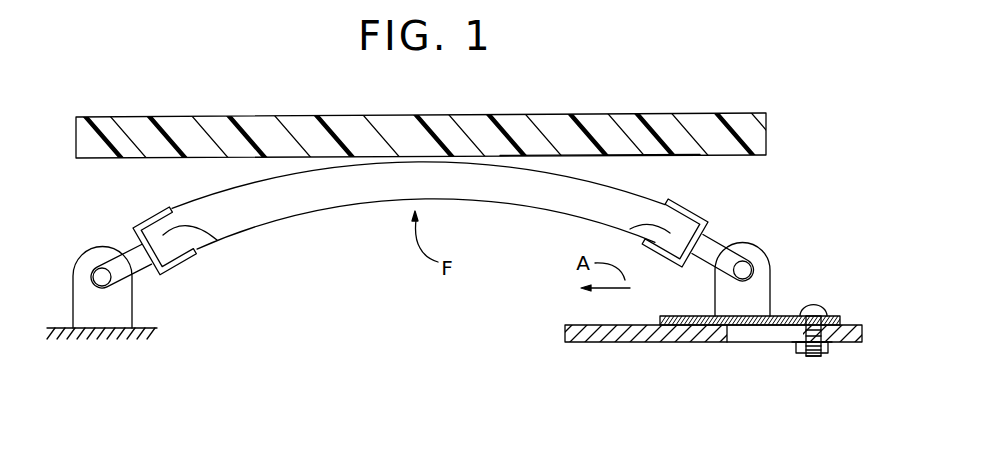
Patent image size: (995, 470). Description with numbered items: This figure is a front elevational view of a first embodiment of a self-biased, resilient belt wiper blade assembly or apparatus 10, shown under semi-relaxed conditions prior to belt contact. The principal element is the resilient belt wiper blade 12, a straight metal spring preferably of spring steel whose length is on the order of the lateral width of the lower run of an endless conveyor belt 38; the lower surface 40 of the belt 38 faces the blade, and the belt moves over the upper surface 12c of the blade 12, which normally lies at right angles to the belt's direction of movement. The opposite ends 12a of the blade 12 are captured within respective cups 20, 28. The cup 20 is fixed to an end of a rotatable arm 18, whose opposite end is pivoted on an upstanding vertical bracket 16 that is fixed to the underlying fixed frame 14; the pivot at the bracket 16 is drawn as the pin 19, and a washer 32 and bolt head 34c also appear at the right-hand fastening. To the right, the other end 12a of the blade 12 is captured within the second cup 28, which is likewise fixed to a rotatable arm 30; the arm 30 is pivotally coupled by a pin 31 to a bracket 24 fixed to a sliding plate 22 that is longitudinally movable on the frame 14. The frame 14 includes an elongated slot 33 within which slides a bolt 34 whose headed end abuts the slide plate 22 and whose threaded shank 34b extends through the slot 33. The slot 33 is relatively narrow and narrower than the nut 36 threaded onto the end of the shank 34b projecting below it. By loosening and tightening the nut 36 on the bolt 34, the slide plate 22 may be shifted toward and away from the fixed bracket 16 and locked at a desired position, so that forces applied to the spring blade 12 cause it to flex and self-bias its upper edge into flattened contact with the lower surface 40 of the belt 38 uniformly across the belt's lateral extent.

The belt wiper blade assembly 10 is at (797, 163).
The resilient belt wiper blade 12 is at (305, 218).
The blade end 12a is at (215, 239).
The blade upper surface 12c is at (312, 170).
The fixed frame 14 is at (63, 329).
The upstanding vertical bracket 16 is at (125, 317).
The rotatable arm 18 is at (125, 248).
The left pivot pin 19 is at (96, 271).
The cup 20 is at (160, 212).
The sliding plate 22 is at (840, 312).
The bracket 24 is at (763, 293).
The second cup 28 is at (675, 207).
The rotatable arm 30 is at (720, 242).
The pin 31 is at (731, 274).
The washer 32 is at (828, 344).
The elongated slot 33 is at (773, 333).
The bolt 34 is at (851, 326).
The threaded shank 34b is at (807, 342).
The bolt head 34c is at (808, 310).
The nut 36 is at (813, 354).
The endless conveyor belt 38 is at (462, 111).
The belt lower surface 40 is at (613, 158).